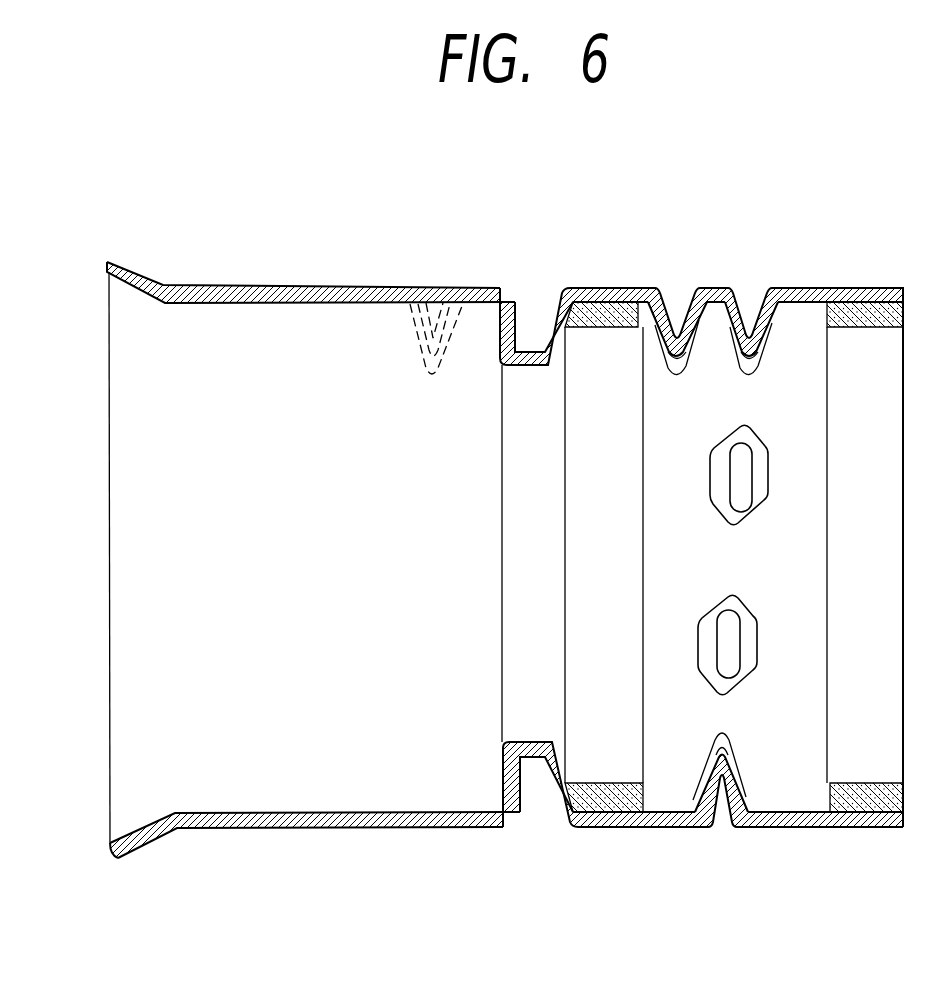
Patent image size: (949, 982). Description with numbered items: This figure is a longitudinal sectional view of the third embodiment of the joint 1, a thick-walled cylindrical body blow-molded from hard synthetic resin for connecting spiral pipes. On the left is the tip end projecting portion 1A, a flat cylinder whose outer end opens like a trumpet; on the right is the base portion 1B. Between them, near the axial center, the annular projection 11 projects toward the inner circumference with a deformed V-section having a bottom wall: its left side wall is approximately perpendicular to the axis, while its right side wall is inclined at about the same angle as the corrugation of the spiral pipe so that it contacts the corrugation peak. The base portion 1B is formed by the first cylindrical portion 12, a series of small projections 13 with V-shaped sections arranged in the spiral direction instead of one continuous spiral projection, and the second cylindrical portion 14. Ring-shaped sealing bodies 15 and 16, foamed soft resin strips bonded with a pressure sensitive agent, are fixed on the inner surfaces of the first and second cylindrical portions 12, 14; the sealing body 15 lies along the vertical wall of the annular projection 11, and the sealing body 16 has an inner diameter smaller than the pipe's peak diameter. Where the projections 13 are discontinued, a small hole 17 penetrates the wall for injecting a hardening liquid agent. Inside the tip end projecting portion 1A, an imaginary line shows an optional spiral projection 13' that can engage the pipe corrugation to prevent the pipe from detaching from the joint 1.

The joint 1 is at (322, 265).
The tip end projecting portion 1A is at (330, 828).
The base portion 1B is at (660, 827).
The annular projection 11 is at (533, 348).
The first cylindrical portion 12 is at (598, 827).
The small projections 13 is at (713, 530).
The spiral projection 13' is at (436, 271).
The second cylindrical portion 14 is at (842, 827).
The sealing body 15 is at (600, 290).
The sealing body 16 is at (867, 287).
The small hole 17 is at (718, 287).